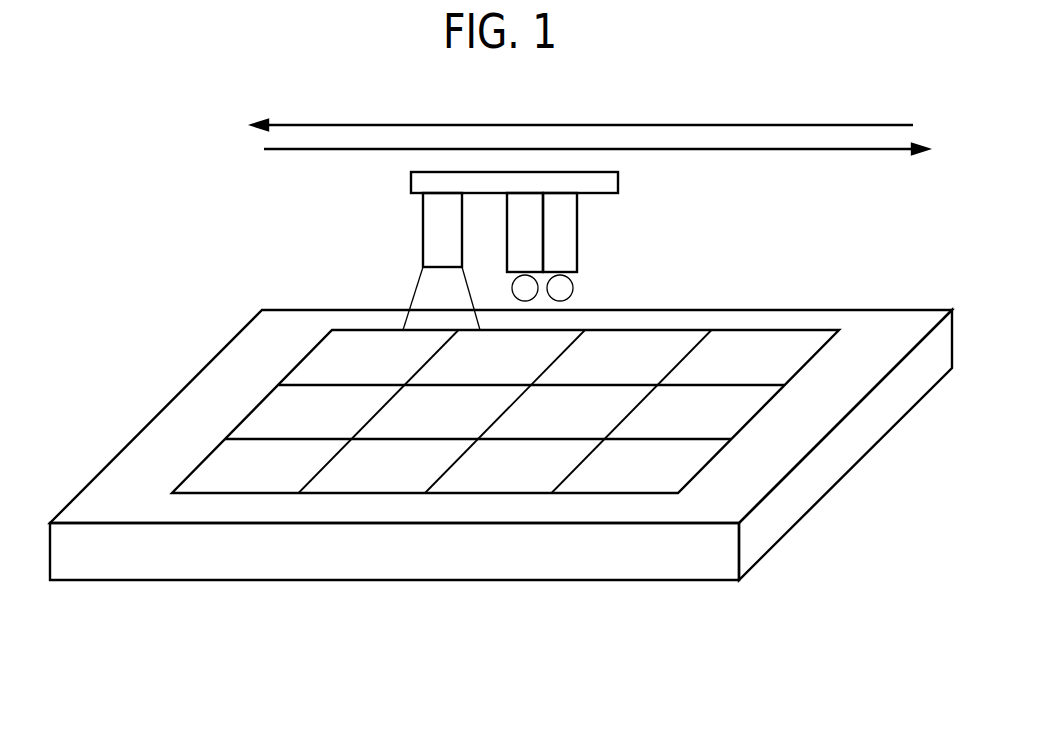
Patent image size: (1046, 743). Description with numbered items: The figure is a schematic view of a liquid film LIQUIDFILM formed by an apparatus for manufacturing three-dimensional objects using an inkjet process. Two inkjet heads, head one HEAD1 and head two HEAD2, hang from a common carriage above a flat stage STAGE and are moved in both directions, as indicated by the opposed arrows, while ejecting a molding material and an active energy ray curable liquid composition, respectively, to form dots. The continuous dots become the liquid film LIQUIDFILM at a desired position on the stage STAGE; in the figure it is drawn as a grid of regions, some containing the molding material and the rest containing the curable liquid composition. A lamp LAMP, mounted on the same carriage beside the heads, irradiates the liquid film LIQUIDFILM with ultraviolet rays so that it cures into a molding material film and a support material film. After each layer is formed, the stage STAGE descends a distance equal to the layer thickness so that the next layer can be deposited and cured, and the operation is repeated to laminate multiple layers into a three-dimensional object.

The lamp LAMP is at (423, 228).
The head 1 HEAD1 is at (527, 213).
The head 2 HEAD2 is at (563, 248).
The stage STAGE is at (501, 445).
The liquid film LIQUIDFILM is at (505, 425).